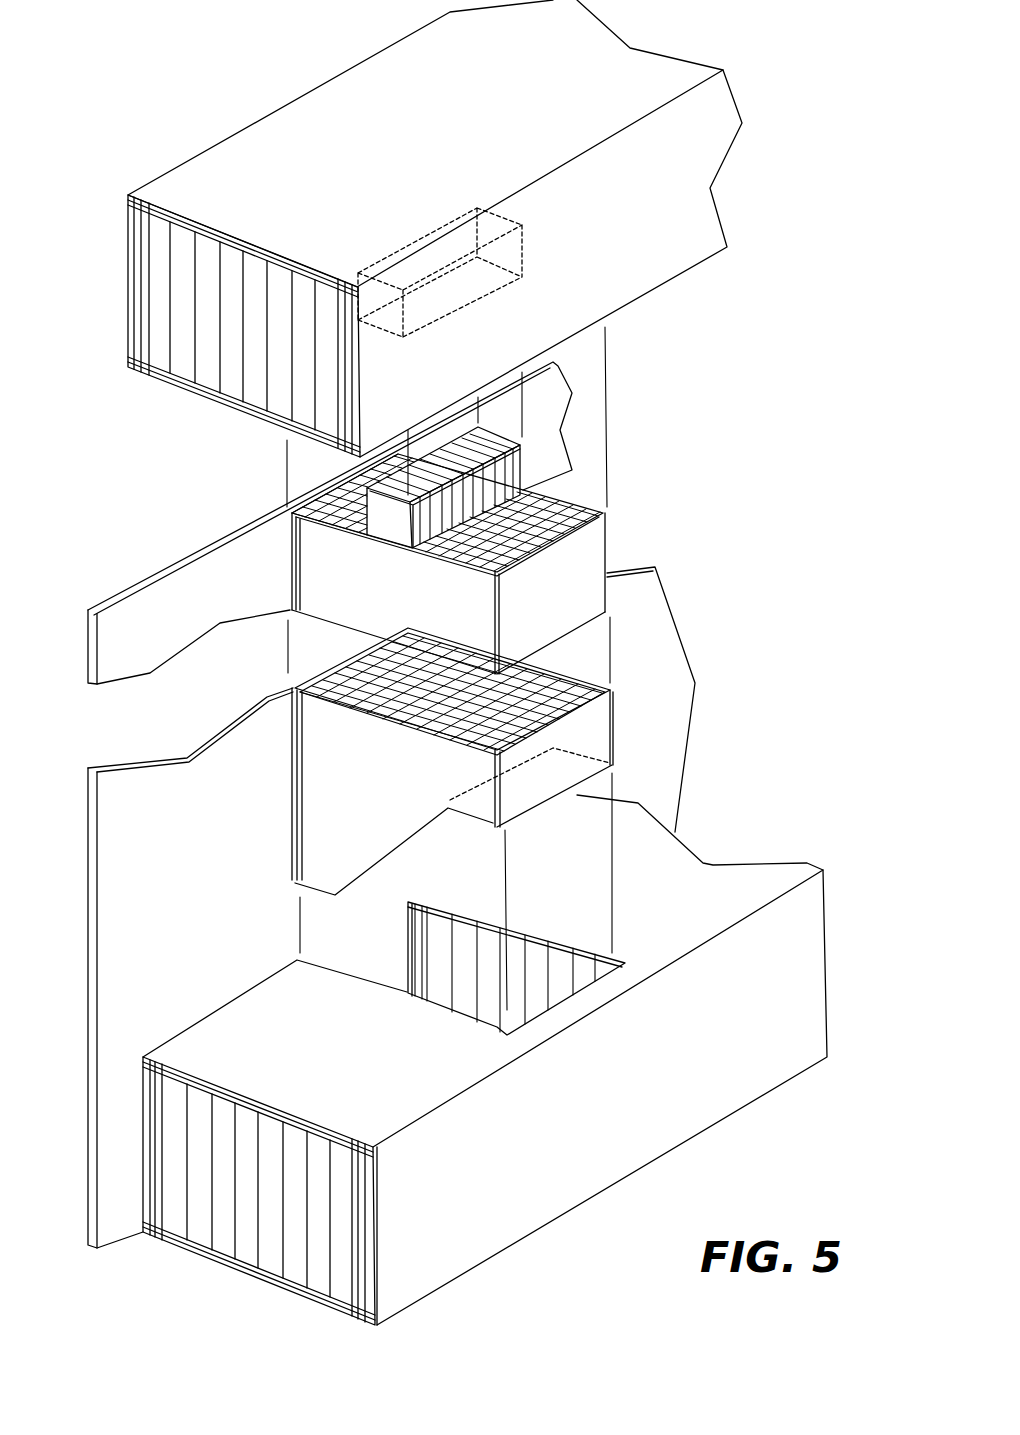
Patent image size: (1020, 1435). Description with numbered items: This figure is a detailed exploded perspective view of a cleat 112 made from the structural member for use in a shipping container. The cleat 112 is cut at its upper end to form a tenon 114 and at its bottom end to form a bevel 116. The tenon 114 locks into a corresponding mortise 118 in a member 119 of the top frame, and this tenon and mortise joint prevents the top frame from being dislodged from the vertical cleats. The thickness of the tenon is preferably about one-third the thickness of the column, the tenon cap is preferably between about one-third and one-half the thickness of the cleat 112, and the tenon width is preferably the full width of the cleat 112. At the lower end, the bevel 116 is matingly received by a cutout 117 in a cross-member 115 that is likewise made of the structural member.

The cleat 112 is at (565, 614).
The tenon 114 is at (525, 462).
The cross-member 115 is at (647, 1150).
The bevel 116 is at (410, 852).
The cutout 117 is at (440, 983).
The mortise 118 is at (437, 245).
The member 119 is at (390, 80).